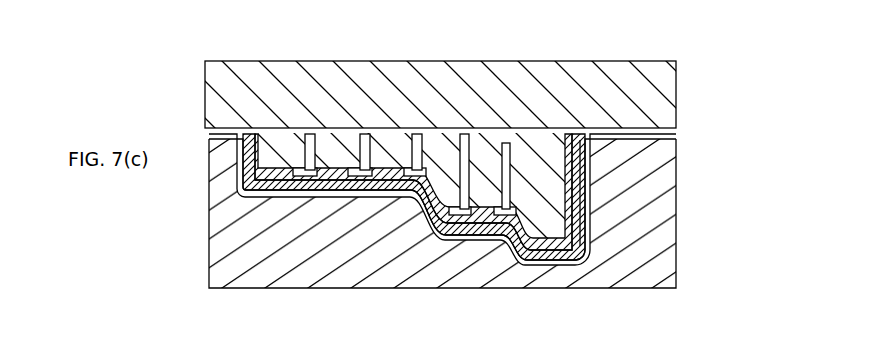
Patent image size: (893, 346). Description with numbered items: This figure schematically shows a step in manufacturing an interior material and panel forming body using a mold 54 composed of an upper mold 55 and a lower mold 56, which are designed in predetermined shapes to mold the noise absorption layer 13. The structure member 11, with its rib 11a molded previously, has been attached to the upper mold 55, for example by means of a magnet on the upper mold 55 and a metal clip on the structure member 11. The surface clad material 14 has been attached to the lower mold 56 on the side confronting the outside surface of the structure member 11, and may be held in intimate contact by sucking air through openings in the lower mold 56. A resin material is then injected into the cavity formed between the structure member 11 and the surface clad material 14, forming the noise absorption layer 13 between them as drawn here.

The mold 54 is at (473, 127).
The upper mold 55 is at (663, 108).
The lower mold 56 is at (667, 267).
The structure member 11 is at (360, 192).
The rib 11a is at (397, 190).
The noise absorption layer 13 is at (277, 160).
The surface clad material 14 is at (503, 262).